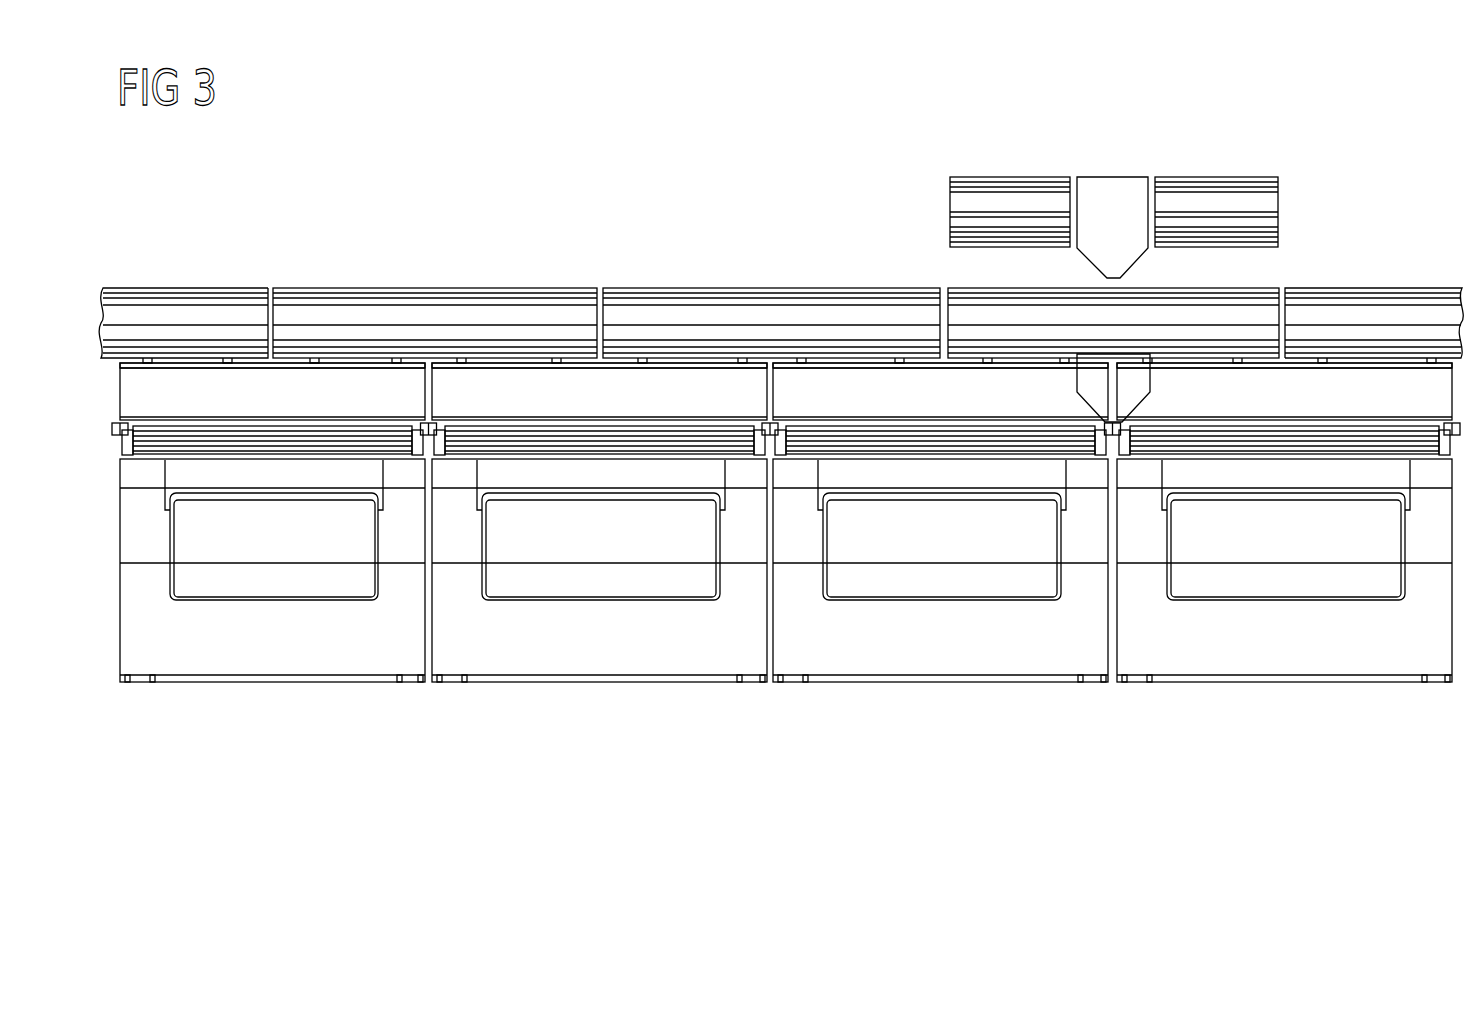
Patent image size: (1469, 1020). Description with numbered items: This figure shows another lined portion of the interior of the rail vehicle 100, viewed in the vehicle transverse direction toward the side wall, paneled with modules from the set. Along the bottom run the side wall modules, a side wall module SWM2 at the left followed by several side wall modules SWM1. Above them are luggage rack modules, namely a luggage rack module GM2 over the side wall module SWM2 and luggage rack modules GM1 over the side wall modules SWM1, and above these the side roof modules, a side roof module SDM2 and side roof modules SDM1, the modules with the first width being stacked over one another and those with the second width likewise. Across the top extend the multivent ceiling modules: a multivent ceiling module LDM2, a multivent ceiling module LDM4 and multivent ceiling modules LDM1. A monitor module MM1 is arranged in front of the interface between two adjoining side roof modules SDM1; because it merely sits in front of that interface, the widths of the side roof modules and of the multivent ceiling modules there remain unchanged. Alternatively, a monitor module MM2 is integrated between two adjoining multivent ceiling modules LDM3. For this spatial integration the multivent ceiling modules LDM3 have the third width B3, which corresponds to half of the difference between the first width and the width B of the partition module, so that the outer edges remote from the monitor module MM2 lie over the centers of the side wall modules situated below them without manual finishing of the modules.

The rail vehicle 100 is at (670, 246).
The multivent ceiling module LDM1 is at (742, 287).
The multivent ceiling module LDM2 is at (187, 287).
The multivent ceiling module LDM3 is at (950, 193).
The multivent ceiling module LDM4 is at (457, 287).
The side roof module SDM1 is at (573, 378).
The side roof module SDM2 is at (333, 372).
The luggage rack module GM1 is at (668, 427).
The luggage rack module GM2 is at (303, 427).
The monitor module MM1 is at (1140, 385).
The monitor module MM2 is at (1106, 200).
The side wall module SWM1 is at (612, 682).
The side wall module SWM2 is at (335, 682).
The width of the partition module B is at (1080, 92).
The third width B3 is at (950, 122).